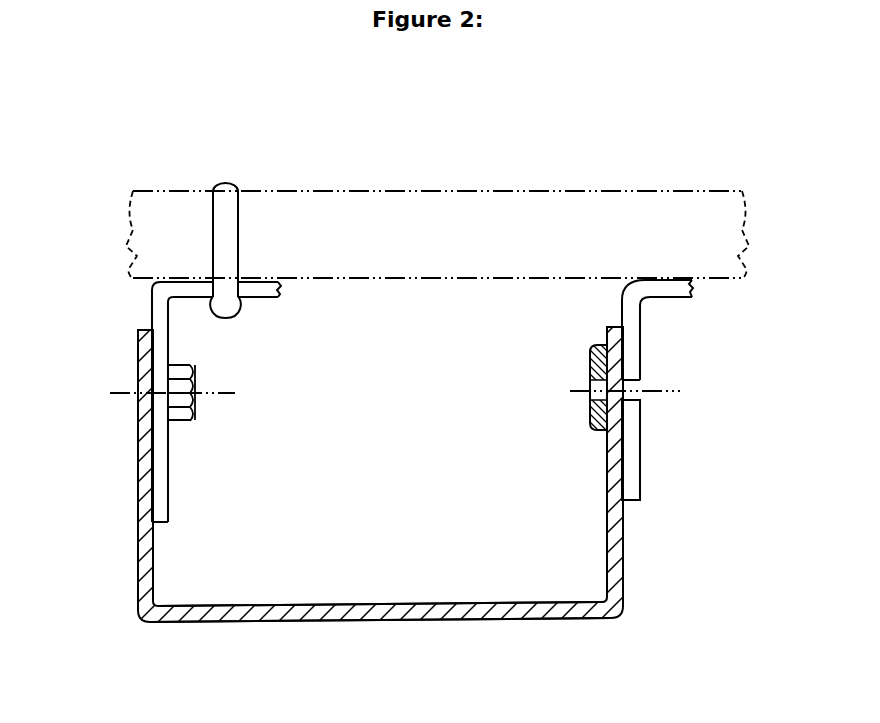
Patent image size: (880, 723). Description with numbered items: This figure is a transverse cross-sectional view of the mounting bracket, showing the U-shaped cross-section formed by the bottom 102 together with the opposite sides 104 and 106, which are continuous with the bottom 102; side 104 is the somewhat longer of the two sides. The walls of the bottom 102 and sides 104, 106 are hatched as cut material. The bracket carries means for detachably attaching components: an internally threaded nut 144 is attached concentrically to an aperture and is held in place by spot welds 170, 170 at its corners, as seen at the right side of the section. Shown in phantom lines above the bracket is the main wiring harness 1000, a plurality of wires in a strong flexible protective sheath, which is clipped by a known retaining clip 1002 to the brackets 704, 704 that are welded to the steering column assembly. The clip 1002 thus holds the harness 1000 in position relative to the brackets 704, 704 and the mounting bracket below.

The bottom 102 is at (268, 612).
The side 104 is at (616, 568).
The side 106 is at (148, 478).
The internally threaded nut 144 is at (596, 402).
The spot weld 170 is at (602, 352).
The bracket 704 is at (157, 307).
The main wiring harness 1000 is at (525, 212).
The retaining clip 1002 is at (225, 190).